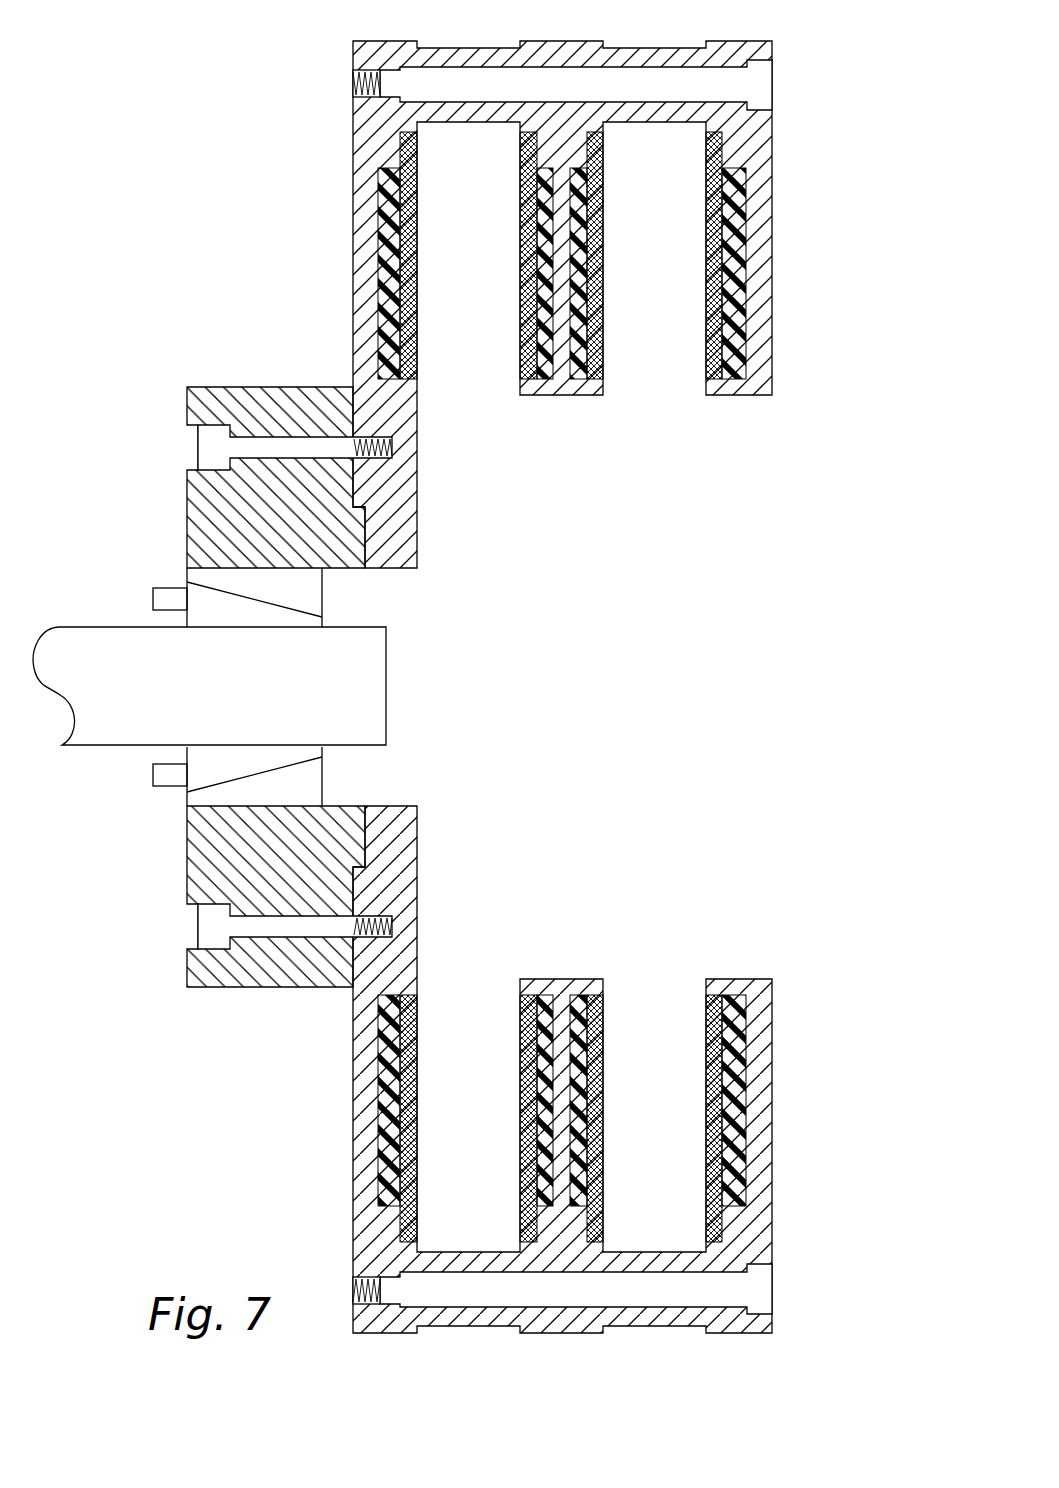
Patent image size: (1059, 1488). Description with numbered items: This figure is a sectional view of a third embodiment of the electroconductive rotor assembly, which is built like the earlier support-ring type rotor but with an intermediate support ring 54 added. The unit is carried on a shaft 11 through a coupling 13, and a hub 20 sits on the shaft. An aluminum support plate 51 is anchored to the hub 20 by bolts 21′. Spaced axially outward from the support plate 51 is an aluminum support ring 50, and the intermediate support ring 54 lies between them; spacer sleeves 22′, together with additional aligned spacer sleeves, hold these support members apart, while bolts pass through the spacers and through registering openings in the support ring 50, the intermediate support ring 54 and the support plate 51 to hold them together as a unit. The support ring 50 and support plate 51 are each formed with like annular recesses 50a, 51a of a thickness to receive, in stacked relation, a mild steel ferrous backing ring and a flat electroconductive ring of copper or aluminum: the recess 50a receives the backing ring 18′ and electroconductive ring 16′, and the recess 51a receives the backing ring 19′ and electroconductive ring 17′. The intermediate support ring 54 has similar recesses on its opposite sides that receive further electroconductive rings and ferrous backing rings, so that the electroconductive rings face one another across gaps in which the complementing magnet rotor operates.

The output shaft 11 is at (115, 632).
The coupling 13 is at (192, 772).
The electroconductive ring 16′ is at (707, 258).
The electroconductive ring 17′ is at (418, 203).
The ferrous backing ring 18′ is at (707, 343).
The ferrous backing ring 19′ is at (383, 230).
The hub 20 is at (255, 398).
The bolt 21′ is at (200, 443).
The spacer sleeve 22′ is at (648, 52).
The aluminum support ring 50 is at (762, 233).
The annular recess 50a is at (750, 335).
The aluminum support plate 51 is at (376, 135).
The annular recess 51a is at (380, 292).
The intermediate support ring 54 is at (560, 387).